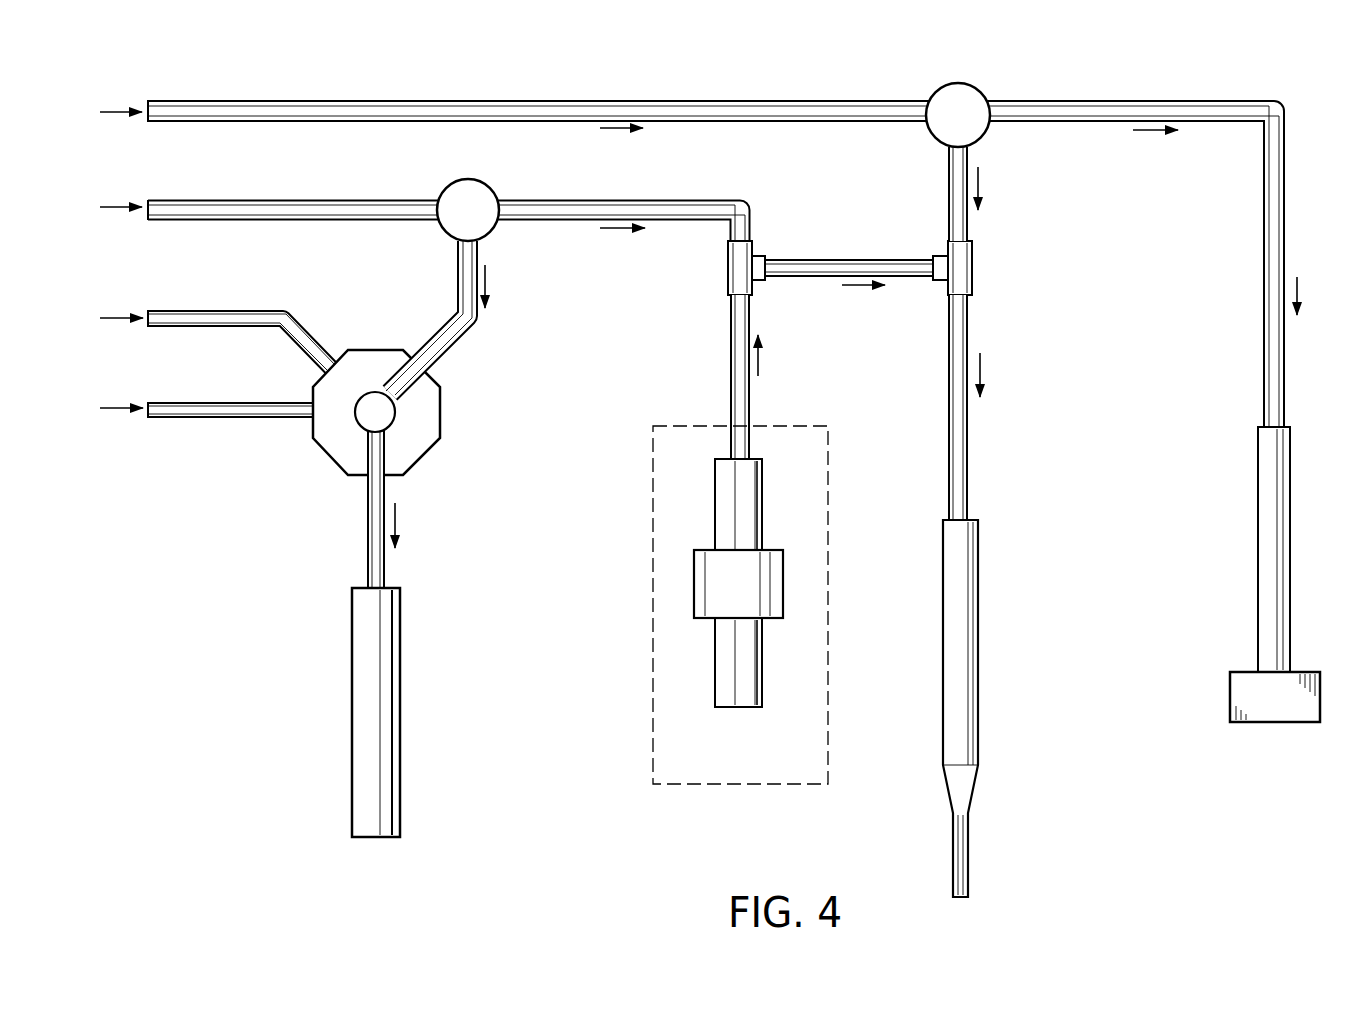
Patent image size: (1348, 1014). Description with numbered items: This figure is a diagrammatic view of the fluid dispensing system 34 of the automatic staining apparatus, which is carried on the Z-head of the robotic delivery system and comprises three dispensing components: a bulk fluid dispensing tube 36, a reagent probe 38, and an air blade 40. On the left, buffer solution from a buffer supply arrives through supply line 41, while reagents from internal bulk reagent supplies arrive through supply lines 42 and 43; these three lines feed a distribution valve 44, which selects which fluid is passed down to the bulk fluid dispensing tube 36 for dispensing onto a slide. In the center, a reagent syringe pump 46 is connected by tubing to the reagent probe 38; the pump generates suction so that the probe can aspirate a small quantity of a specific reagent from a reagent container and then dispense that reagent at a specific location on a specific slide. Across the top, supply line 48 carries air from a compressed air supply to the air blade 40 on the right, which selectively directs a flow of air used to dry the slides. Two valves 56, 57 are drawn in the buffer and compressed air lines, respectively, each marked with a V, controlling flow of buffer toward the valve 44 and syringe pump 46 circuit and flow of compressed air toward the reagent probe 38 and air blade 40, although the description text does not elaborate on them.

The fluid dispensing system 34 is at (515, 77).
The bulk fluid dispensing tube 36 is at (395, 705).
The reagent probe 38 is at (980, 702).
The air blade 40 is at (1268, 724).
The supply line 41 is at (162, 197).
The supply line 42 is at (158, 402).
The supply line 43 is at (180, 308).
The distribution valve 44 is at (432, 407).
The reagent syringe pump 46 is at (828, 502).
The supply line 48 is at (155, 98).
The valve 56 is at (475, 183).
The valve 57 is at (968, 85).